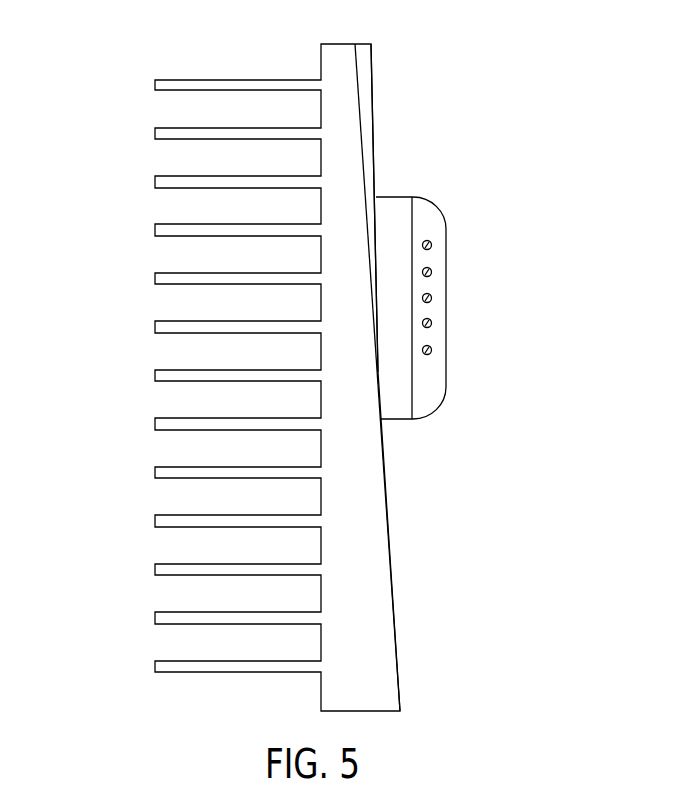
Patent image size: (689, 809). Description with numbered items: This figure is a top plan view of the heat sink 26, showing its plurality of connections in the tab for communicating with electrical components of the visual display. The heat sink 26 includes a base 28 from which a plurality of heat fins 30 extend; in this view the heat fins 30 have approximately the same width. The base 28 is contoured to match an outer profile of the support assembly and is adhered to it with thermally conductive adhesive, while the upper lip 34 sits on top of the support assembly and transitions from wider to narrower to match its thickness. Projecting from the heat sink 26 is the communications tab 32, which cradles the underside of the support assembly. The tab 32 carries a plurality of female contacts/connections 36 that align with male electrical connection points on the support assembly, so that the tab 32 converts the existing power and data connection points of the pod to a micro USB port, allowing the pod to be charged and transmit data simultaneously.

The heat sink 26 is at (297, 377).
The base 28 is at (365, 83).
The heat fins 30 is at (113, 604).
The communications tab 32 is at (435, 424).
The upper lip 34 is at (385, 661).
The contacts/connections 36 is at (431, 242).